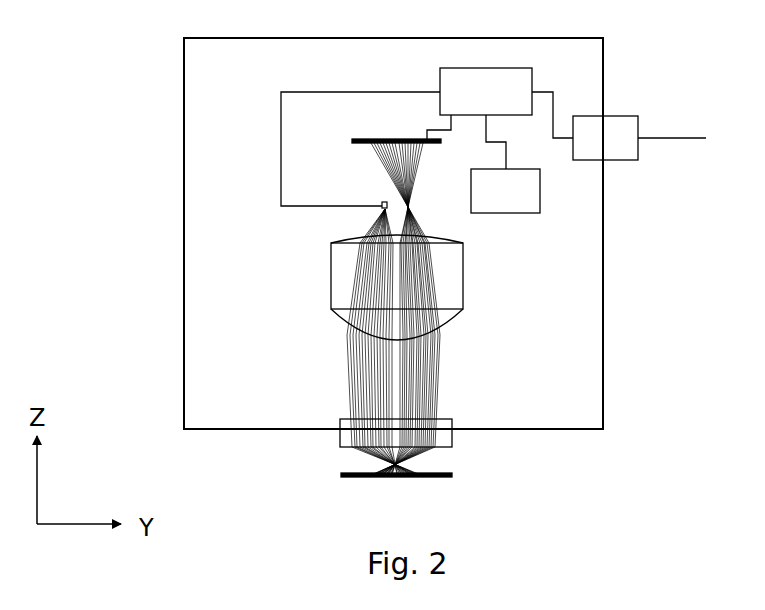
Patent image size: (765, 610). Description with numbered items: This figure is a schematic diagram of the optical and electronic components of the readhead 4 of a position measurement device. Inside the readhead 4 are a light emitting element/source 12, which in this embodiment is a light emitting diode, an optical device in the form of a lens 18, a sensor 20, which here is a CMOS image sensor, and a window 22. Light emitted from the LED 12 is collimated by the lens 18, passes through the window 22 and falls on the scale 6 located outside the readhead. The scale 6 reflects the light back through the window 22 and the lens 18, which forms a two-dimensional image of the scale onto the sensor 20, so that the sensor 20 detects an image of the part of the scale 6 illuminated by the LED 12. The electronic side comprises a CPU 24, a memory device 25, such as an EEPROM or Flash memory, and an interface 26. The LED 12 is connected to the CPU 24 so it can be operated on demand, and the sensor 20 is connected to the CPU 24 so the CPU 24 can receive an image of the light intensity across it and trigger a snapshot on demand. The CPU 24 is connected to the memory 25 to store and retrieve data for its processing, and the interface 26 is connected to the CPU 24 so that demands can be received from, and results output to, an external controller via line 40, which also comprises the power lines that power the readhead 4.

The readhead 4 is at (170, 91).
The scale 6 is at (456, 481).
The light emitting element/source 12 is at (381, 204).
The optical device 18 is at (468, 281).
The sensor 20 is at (362, 139).
The window 22 is at (343, 415).
The CPU 24 is at (486, 91).
The memory device 25 is at (505, 164).
The interface 26 is at (585, 126).
The line 40 is at (694, 126).